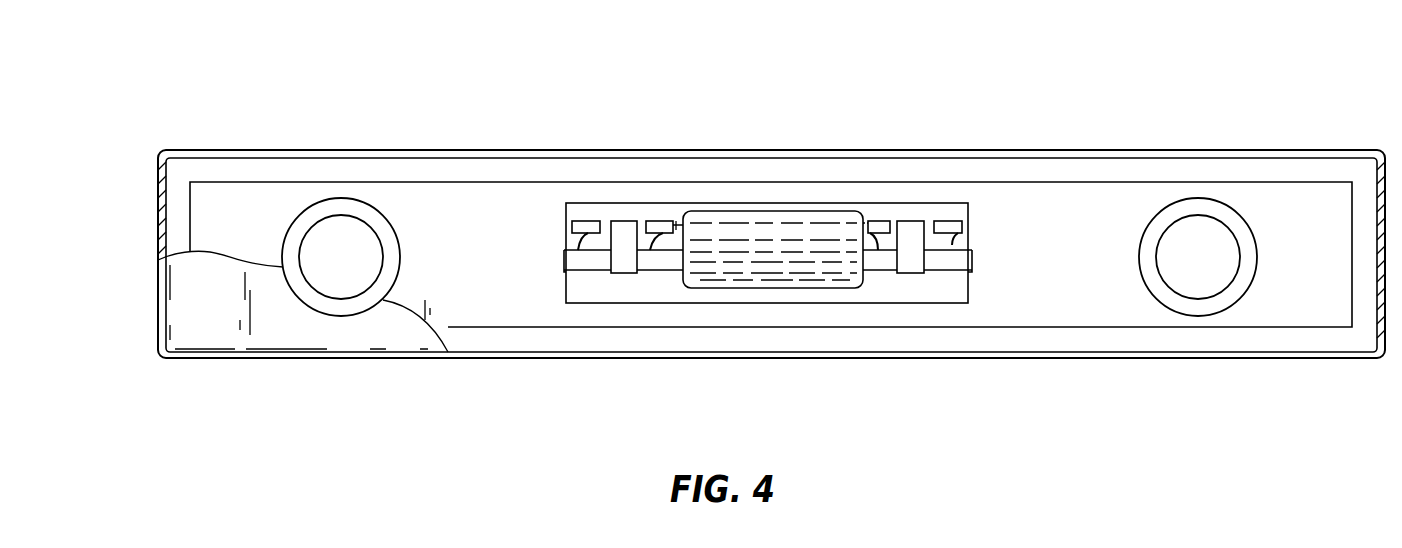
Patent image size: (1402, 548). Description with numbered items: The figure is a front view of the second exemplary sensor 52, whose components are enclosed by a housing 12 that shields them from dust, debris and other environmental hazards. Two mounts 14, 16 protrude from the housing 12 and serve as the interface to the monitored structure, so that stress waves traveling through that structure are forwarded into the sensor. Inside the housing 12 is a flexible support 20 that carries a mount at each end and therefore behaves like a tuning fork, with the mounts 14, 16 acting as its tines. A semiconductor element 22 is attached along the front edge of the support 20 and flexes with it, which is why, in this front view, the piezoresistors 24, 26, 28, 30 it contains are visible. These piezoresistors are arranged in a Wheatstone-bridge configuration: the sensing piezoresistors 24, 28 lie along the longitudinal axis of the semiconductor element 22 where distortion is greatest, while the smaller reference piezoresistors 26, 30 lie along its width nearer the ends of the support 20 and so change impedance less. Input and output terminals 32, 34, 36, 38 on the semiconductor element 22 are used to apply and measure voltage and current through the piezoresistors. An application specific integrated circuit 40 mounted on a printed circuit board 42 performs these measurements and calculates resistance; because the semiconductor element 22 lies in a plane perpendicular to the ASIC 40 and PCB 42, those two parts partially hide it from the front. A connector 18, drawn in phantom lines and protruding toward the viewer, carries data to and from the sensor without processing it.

The second exemplary sensor 52 is at (316, 107).
The housing 12 is at (388, 152).
The mount 14 is at (350, 298).
The mount 16 is at (1213, 297).
The connector 18 is at (732, 282).
The support 20 is at (1078, 192).
The semiconductor element 22 is at (566, 283).
The piezoresistor 24 is at (738, 212).
The piezoresistor 26 is at (622, 220).
The piezoresistor 28 is at (813, 280).
The piezoresistor 30 is at (915, 220).
The input and output terminal 32 is at (577, 220).
The input and output terminal 34 is at (667, 220).
The input and output terminal 36 is at (872, 220).
The input and output terminal 38 is at (947, 220).
The application specific integrated circuit 40 is at (952, 245).
The printed circuit board 42 is at (881, 262).